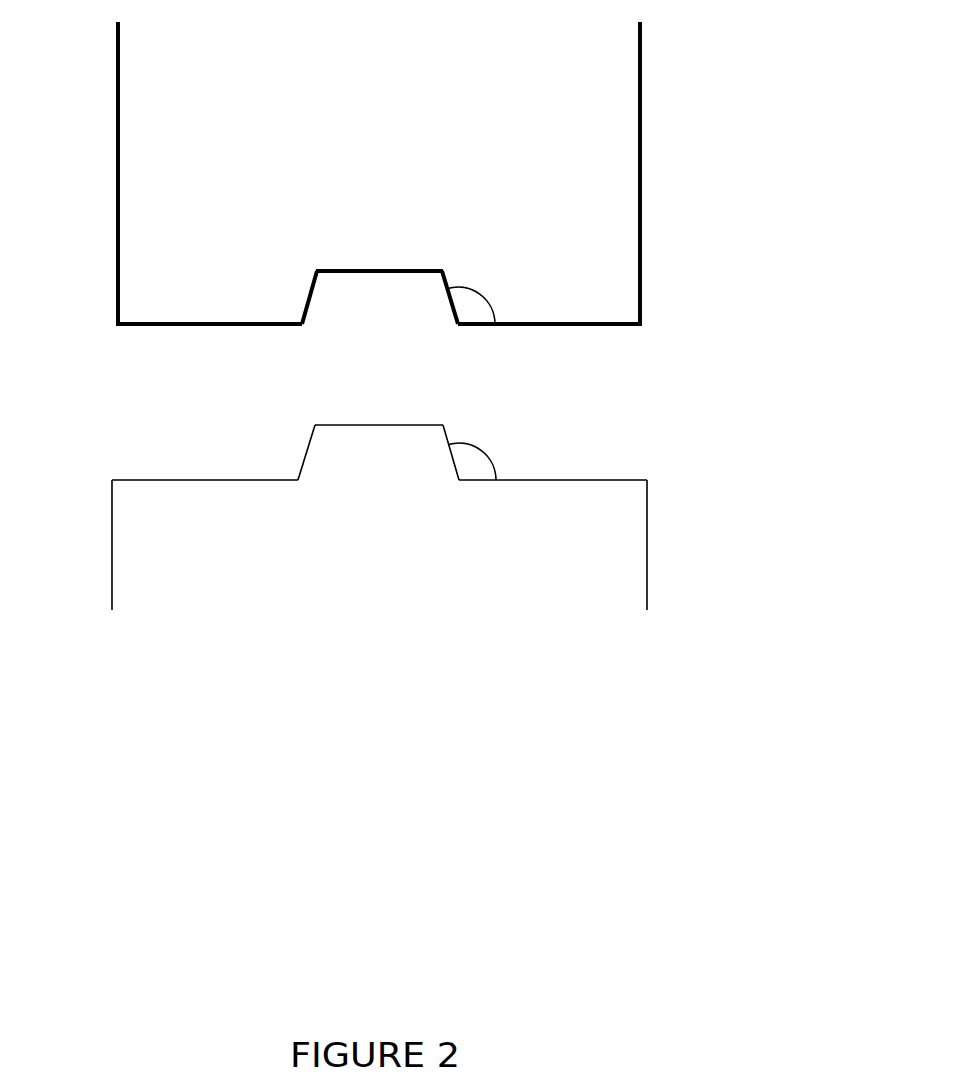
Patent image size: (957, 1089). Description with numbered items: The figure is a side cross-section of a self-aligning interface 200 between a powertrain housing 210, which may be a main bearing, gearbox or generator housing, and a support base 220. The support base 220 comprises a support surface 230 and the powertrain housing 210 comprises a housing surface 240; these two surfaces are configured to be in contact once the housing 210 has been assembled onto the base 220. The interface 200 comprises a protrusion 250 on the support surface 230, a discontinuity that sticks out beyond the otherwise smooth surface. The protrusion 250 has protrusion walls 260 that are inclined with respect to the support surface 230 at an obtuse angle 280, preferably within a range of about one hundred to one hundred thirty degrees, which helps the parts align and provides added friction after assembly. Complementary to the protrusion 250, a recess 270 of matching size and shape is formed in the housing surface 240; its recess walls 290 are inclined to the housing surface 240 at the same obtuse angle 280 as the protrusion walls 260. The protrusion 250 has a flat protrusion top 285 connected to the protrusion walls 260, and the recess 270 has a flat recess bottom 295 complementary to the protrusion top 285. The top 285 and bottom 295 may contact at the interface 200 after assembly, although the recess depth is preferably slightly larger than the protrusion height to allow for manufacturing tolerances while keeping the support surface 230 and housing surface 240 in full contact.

The self-aligning interface 200 is at (411, 317).
The powertrain housing 210 is at (144, 145).
The support base 220 is at (143, 545).
The support surface 230 is at (142, 480).
The housing surface 240 is at (135, 327).
The protrusion 250 is at (318, 433).
The protrusion walls 260 is at (300, 465).
The recess 270 is at (319, 276).
The obtuse angle 280 is at (467, 310).
The protrusion top 285 is at (350, 405).
The recess walls 290 is at (303, 308).
The recess bottom 295 is at (350, 250).